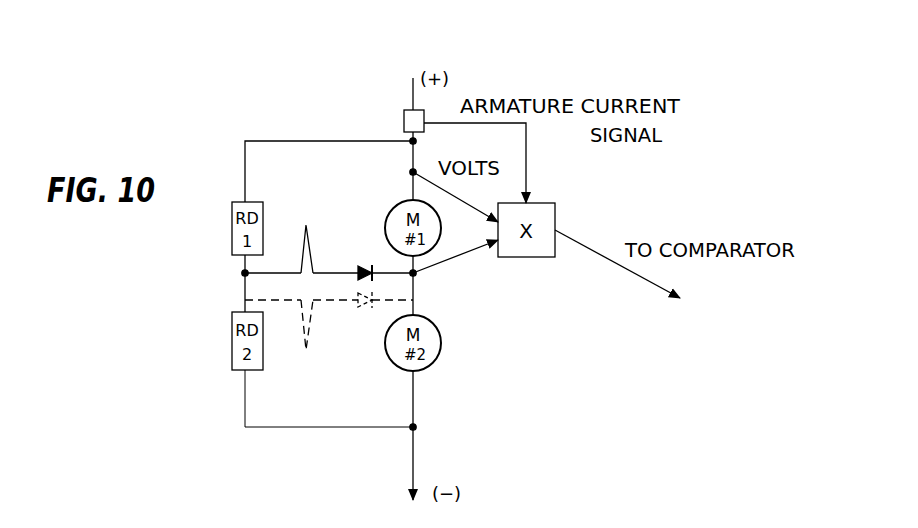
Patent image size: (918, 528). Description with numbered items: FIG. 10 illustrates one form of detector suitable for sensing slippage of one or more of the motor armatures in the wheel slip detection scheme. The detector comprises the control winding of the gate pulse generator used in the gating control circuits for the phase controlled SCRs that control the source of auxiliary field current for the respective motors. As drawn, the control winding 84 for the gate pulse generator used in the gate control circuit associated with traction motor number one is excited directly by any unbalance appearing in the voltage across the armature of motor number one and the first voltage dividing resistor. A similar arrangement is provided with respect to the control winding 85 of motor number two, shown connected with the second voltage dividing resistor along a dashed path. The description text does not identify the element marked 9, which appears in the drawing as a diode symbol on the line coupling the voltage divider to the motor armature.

The control winding 84 is at (310, 248).
The control winding 85 is at (312, 330).
The diode 9 is at (364, 265).